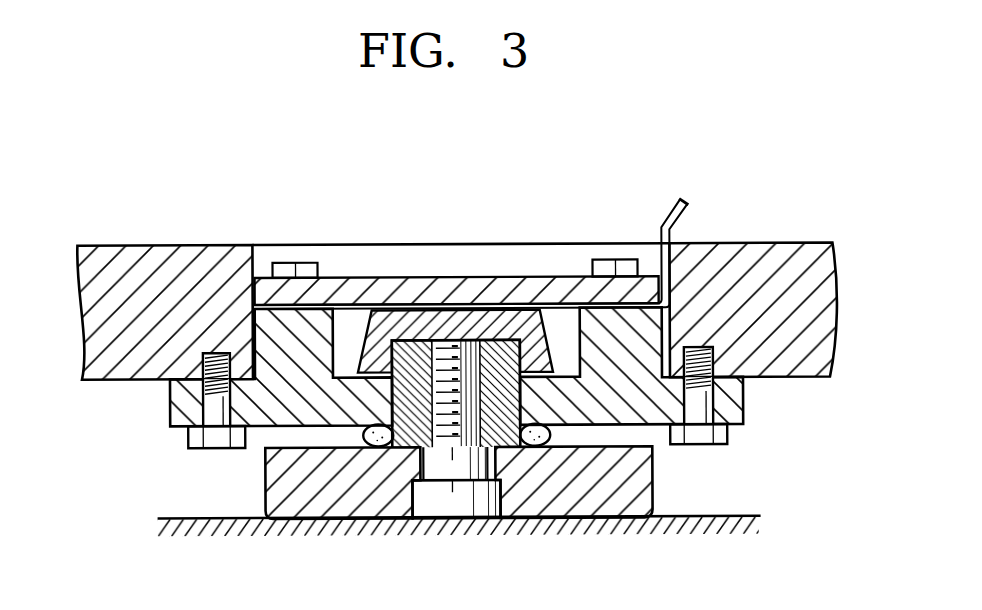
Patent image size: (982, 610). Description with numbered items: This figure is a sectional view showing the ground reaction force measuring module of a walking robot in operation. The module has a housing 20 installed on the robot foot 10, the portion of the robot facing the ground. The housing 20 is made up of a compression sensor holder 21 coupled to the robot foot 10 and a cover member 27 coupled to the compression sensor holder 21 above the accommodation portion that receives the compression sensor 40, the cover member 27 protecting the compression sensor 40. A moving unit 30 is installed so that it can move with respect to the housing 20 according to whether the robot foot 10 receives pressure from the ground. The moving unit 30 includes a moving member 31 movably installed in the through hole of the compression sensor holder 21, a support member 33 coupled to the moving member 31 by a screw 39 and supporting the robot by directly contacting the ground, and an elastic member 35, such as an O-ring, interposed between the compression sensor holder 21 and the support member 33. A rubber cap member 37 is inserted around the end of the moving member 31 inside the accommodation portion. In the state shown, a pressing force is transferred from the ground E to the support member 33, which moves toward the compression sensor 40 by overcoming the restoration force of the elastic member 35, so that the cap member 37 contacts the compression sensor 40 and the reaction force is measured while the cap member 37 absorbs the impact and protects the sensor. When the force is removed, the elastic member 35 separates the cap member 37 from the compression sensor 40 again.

The robot foot 10 is at (778, 248).
The housing 20 is at (436, 258).
The compression sensor holder 21 is at (743, 397).
The cover member 27 is at (523, 282).
The moving unit 30 is at (247, 532).
The moving member 31 is at (408, 425).
The support member 33 is at (308, 512).
The elastic member 35 is at (537, 438).
The cap member 37 is at (540, 307).
The screw 39 is at (455, 510).
The compression sensor 40 is at (368, 306).
The ground E is at (728, 515).